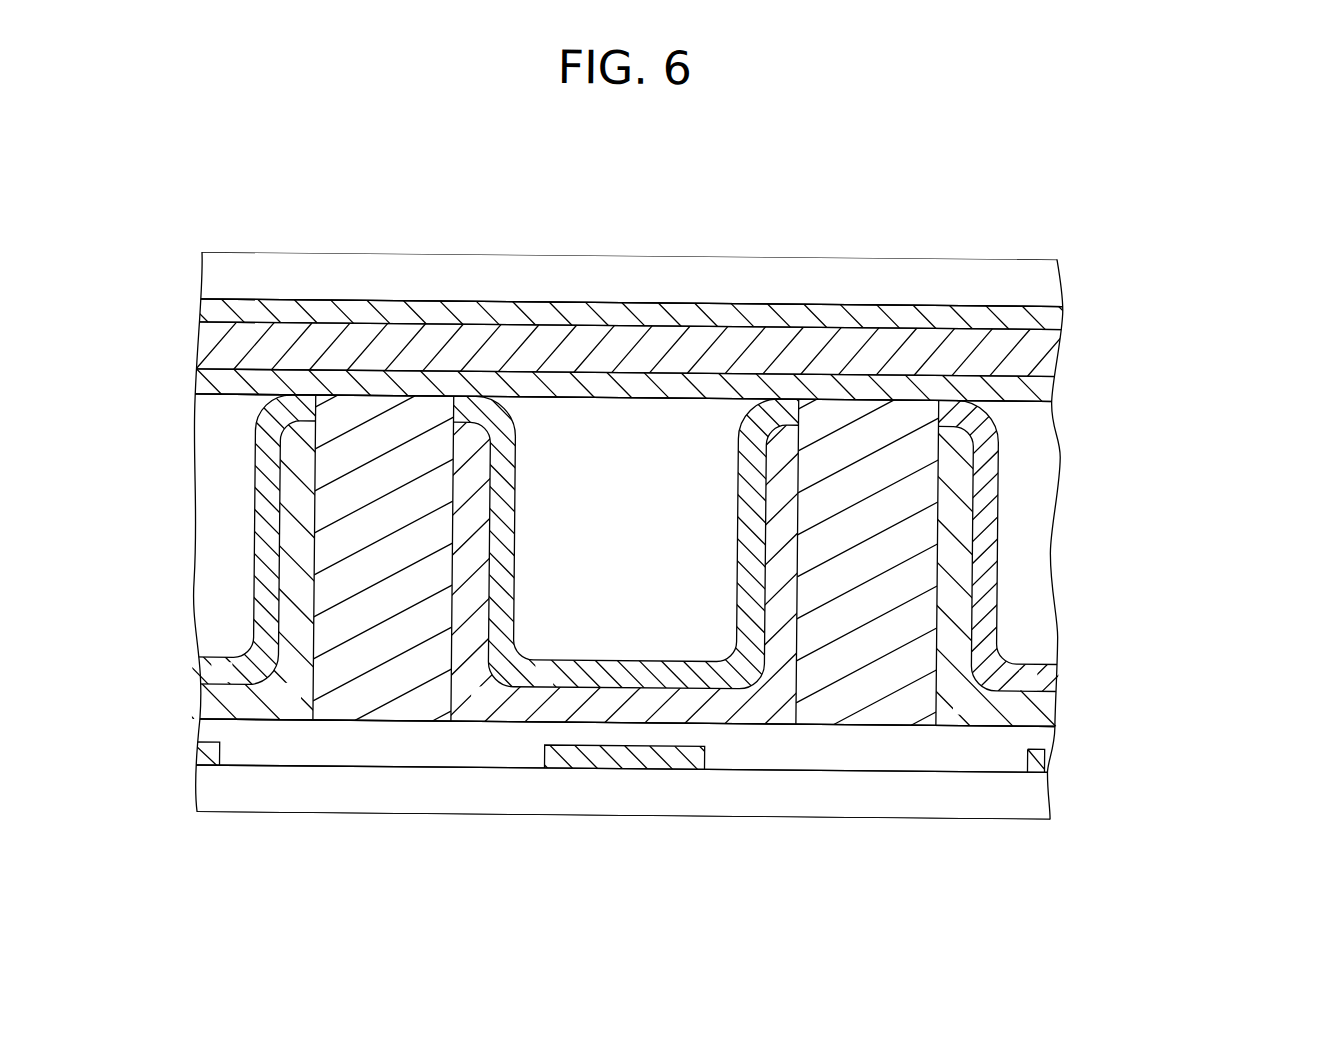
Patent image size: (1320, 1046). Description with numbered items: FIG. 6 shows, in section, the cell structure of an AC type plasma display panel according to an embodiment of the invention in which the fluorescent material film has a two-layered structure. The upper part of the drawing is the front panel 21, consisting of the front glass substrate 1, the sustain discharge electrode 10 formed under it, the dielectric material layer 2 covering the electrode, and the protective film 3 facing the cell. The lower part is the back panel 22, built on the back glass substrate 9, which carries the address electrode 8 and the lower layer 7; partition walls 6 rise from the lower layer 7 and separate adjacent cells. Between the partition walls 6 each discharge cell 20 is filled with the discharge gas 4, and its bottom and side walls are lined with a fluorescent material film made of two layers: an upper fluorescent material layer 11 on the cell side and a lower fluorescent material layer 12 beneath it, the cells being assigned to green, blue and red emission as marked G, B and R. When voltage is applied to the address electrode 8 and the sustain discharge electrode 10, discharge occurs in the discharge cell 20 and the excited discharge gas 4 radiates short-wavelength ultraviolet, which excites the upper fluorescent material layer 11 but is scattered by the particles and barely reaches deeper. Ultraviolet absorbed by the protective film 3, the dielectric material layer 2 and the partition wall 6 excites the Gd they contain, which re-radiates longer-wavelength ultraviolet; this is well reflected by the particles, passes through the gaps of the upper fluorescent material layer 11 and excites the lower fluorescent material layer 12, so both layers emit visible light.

The front glass substrate 1 is at (705, 276).
The dielectric material layer 2 is at (592, 329).
The protective film 3 is at (1030, 380).
The discharge gas 4 is at (693, 488).
The partition wall 6 is at (917, 649).
The lower layer 7 is at (1017, 735).
The address electrode 8 is at (634, 758).
The back glass substrate 9 is at (1032, 790).
The sustain discharge electrode 10 is at (1033, 312).
The upper fluorescent material layer 11 is at (992, 563).
The lower fluorescent material layer 12 is at (962, 518).
The discharge cell 20 is at (1173, 466).
The front panel 21 is at (1183, 261).
The back panel 22 is at (1237, 521).